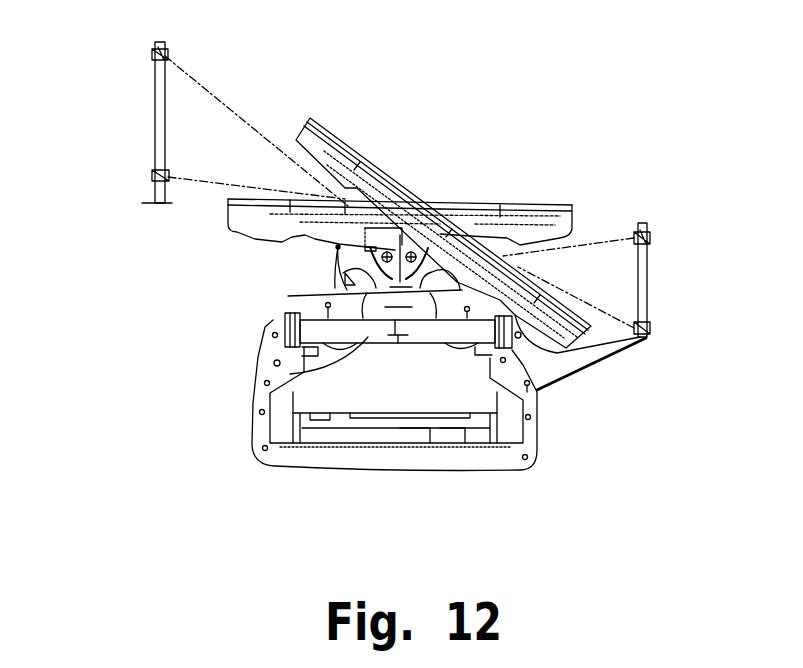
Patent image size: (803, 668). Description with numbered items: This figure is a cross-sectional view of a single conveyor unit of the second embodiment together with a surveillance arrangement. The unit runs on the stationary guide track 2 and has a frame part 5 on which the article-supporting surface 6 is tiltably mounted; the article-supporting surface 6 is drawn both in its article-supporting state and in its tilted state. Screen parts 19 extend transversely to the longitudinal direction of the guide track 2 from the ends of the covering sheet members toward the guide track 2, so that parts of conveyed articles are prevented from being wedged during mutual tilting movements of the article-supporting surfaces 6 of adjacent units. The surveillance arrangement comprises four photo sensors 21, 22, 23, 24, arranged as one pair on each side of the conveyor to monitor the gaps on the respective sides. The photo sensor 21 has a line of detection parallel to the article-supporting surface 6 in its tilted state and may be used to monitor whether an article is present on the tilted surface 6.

The stationary track 2 is at (530, 405).
The frame part 5 is at (290, 374).
The article-supporting surface 6 is at (488, 200).
The screen parts 19 is at (308, 137).
The photo sensor 21 is at (650, 330).
The photo sensor 22 is at (652, 236).
The photo sensor 23 is at (152, 174).
The photo sensor 24 is at (152, 52).